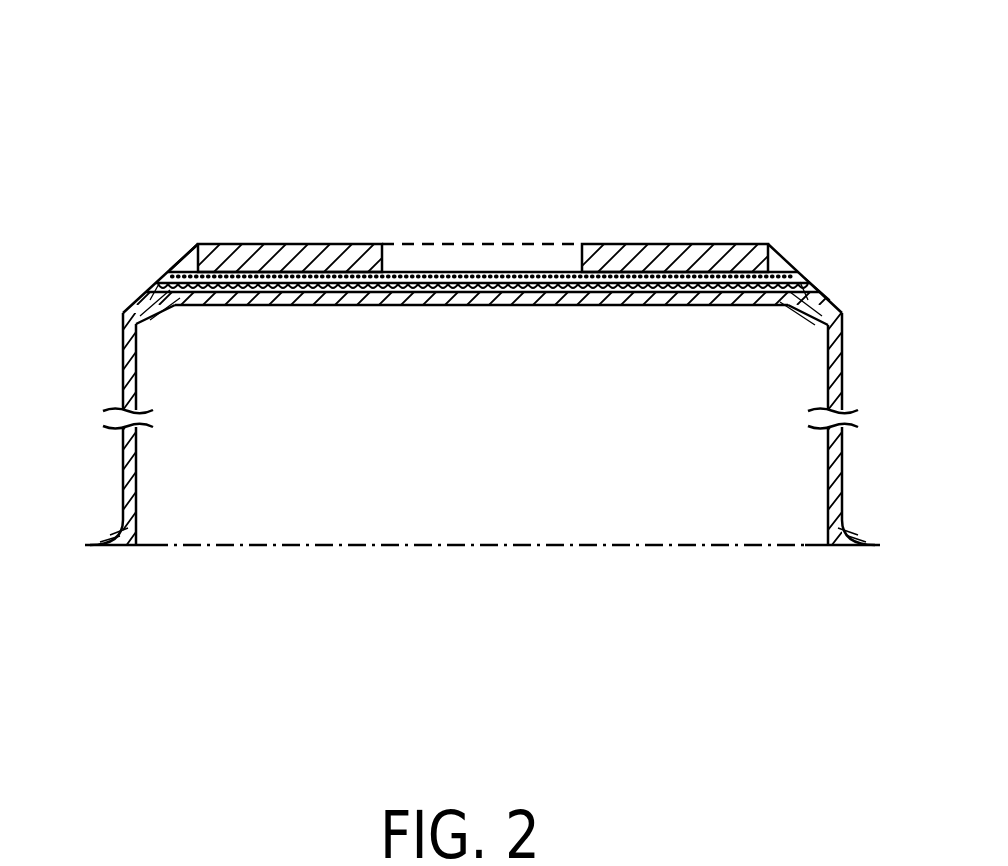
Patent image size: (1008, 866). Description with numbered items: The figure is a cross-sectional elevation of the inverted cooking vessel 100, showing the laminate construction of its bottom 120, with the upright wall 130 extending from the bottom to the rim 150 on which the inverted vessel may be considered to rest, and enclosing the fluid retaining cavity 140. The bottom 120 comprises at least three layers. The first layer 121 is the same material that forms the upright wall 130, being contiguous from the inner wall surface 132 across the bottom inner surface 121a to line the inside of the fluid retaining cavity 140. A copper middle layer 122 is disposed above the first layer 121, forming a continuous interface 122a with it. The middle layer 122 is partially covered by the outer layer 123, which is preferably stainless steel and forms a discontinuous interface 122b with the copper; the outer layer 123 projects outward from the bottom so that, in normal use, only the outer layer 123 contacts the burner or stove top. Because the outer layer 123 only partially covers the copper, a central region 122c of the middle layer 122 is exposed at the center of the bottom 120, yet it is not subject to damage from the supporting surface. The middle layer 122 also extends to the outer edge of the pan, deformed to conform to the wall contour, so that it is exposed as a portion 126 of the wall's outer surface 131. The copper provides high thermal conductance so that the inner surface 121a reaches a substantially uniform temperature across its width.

The cooking vessel 100 is at (600, 104).
The bottom 120 is at (246, 186).
The first layer 121 is at (506, 300).
The inner surface 121a is at (447, 304).
The middle layer 122 is at (794, 285).
The interface 122a is at (640, 292).
The discontinuous interface 122b is at (700, 270).
The central region 122c is at (482, 244).
The outer layer 123 is at (336, 244).
The exposed portion 126 is at (186, 252).
The upright wall 130 is at (122, 360).
The outer surface 131 is at (124, 480).
The inner wall surface 132 is at (137, 480).
The fluid retaining cavity 140 is at (470, 520).
The rim 150 is at (846, 548).